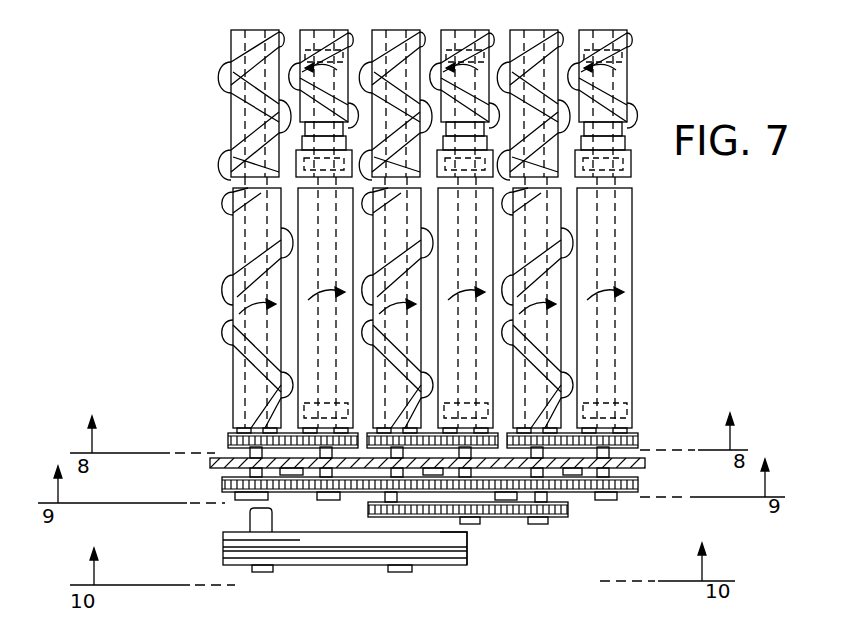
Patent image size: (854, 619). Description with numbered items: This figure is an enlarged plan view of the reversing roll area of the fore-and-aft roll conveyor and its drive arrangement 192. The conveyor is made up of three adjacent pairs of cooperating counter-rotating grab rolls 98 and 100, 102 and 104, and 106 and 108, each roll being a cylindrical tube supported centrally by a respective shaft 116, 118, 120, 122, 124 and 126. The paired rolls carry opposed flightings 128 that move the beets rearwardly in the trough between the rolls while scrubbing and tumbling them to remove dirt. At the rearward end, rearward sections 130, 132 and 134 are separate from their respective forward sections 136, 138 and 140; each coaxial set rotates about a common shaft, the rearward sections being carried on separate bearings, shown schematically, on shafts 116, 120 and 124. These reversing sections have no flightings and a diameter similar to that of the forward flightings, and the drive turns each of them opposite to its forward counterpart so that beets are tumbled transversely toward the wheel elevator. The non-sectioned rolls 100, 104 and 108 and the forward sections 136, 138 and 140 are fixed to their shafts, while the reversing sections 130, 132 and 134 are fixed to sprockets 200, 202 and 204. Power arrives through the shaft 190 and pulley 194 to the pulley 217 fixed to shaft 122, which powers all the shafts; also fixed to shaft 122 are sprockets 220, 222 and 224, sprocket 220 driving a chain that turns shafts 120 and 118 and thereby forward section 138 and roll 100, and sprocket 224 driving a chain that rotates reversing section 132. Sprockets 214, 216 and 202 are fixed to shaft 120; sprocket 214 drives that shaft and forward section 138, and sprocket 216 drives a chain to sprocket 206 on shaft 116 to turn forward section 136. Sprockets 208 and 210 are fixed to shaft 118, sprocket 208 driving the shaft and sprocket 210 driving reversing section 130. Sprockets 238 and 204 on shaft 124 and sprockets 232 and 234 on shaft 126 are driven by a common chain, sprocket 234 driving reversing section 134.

The grab roll 98 is at (598, 33).
The grab roll 100 is at (520, 33).
The grab roll 102 is at (458, 35).
The grab roll 104 is at (387, 33).
The grab roll 106 is at (320, 37).
The grab roll 108 is at (232, 45).
The shaft 116 is at (607, 500).
The shaft 118 is at (543, 524).
The shaft 120 is at (478, 520).
The shaft 122 is at (397, 572).
The shaft 124 is at (327, 500).
The shaft 126 is at (255, 500).
The flightings 128 is at (225, 163).
The rearward section 130 is at (622, 265).
The rearward section 132 is at (478, 233).
The rearward section 134 is at (305, 268).
The forward section 136 is at (628, 92).
The forward section 138 is at (480, 90).
The forward section 140 is at (310, 108).
The shaft 190 is at (250, 513).
The drive arrangement 192 is at (722, 548).
The pulley 194 is at (225, 572).
The sprocket 200 is at (627, 427).
The sprocket 202 is at (495, 428).
The sprocket 204 is at (320, 435).
The sprocket 206 is at (636, 480).
The sprocket 208 is at (568, 513).
The sprocket 210 is at (537, 438).
The sprocket 214 is at (470, 524).
The sprocket 216 is at (448, 566).
The pulley 217 is at (436, 566).
The sprocket 220 is at (397, 512).
The sprocket 222 is at (367, 512).
The sprocket 224 is at (390, 427).
The sprocket 232 is at (225, 483).
The sprocket 234 is at (240, 433).
The sprocket 238 is at (300, 497).